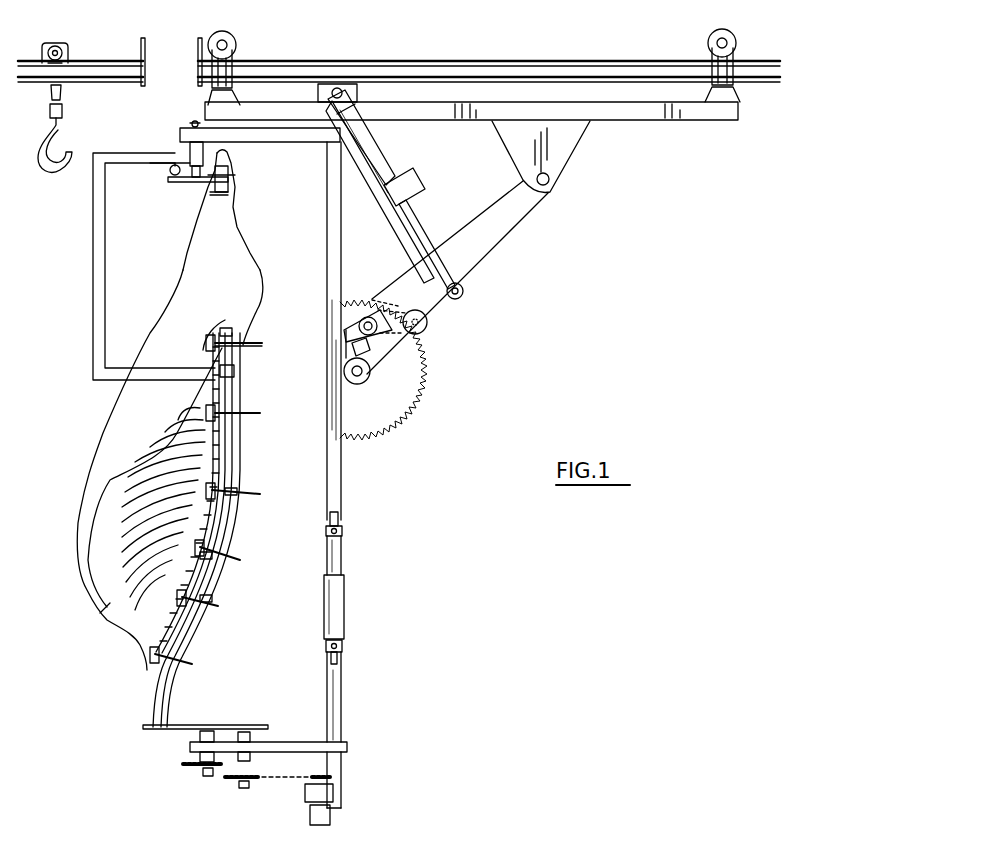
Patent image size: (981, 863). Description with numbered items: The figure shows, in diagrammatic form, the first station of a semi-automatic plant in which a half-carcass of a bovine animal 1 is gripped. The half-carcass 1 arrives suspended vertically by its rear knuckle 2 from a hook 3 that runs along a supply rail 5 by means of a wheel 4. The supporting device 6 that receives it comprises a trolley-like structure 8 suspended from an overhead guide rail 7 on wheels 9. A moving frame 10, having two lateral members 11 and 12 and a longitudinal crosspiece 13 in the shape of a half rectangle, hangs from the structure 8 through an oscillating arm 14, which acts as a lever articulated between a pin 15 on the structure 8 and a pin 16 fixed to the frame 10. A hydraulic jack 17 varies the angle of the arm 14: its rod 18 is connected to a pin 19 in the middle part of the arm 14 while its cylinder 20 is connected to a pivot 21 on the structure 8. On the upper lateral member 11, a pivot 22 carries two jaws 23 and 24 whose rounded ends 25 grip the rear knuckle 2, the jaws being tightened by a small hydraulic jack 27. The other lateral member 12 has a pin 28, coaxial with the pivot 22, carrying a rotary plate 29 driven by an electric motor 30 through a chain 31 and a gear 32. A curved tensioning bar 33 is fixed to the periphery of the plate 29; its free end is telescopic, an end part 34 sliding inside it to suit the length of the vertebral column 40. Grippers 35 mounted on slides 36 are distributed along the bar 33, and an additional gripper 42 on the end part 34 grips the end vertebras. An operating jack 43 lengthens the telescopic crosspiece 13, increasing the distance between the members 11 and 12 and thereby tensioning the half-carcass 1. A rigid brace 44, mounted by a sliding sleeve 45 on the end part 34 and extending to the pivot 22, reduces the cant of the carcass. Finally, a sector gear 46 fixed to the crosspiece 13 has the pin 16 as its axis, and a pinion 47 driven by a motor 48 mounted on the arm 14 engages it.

The half-carcass of a bovine animal 1 is at (98, 420).
The rear knuckle 2 is at (236, 190).
The hook 3 is at (60, 170).
The wheel 4 is at (57, 45).
The supply rail 5 is at (104, 70).
The supporting device 6 is at (567, 339).
The overhead guide rail 7 is at (485, 68).
The structure 8 is at (633, 110).
The wheels 9 is at (233, 40).
The moving frame 10 is at (368, 475).
The lateral member 11 is at (285, 135).
The lateral member 12 is at (293, 744).
The longitudinal crosspiece 13 is at (333, 257).
The oscillating arm 14 is at (480, 250).
The pin 15 is at (549, 180).
The pin 16 is at (360, 377).
The hydraulic jack 17 is at (412, 167).
The rod 18 is at (421, 229).
The pin 19 is at (462, 297).
The cylinder 20 is at (368, 149).
The pivot 21 is at (338, 80).
The pivot 22 is at (195, 182).
The jaw 23 is at (226, 193).
The jaw 24 is at (228, 196).
The rounded ends 25 is at (229, 181).
The small hydraulic jack 27 is at (173, 167).
The pin 28 is at (196, 770).
The rotary plate 29 is at (167, 730).
The electric motor 30 is at (325, 822).
The chain 31 is at (283, 781).
The gear 32 is at (226, 781).
The tensioning bar 33 is at (237, 451).
The end part 34 is at (235, 391).
The grippers 35 is at (252, 494).
The slides 36 is at (240, 497).
The vertebral column 40 is at (215, 563).
The additional gripper 42 is at (246, 343).
The operating jack 43 is at (335, 606).
The rigid brace 44 is at (100, 267).
The sliding sleeve 45 is at (240, 370).
The sector gear 46 is at (418, 403).
The pinion 47 is at (428, 330).
The motor 48 is at (370, 346).